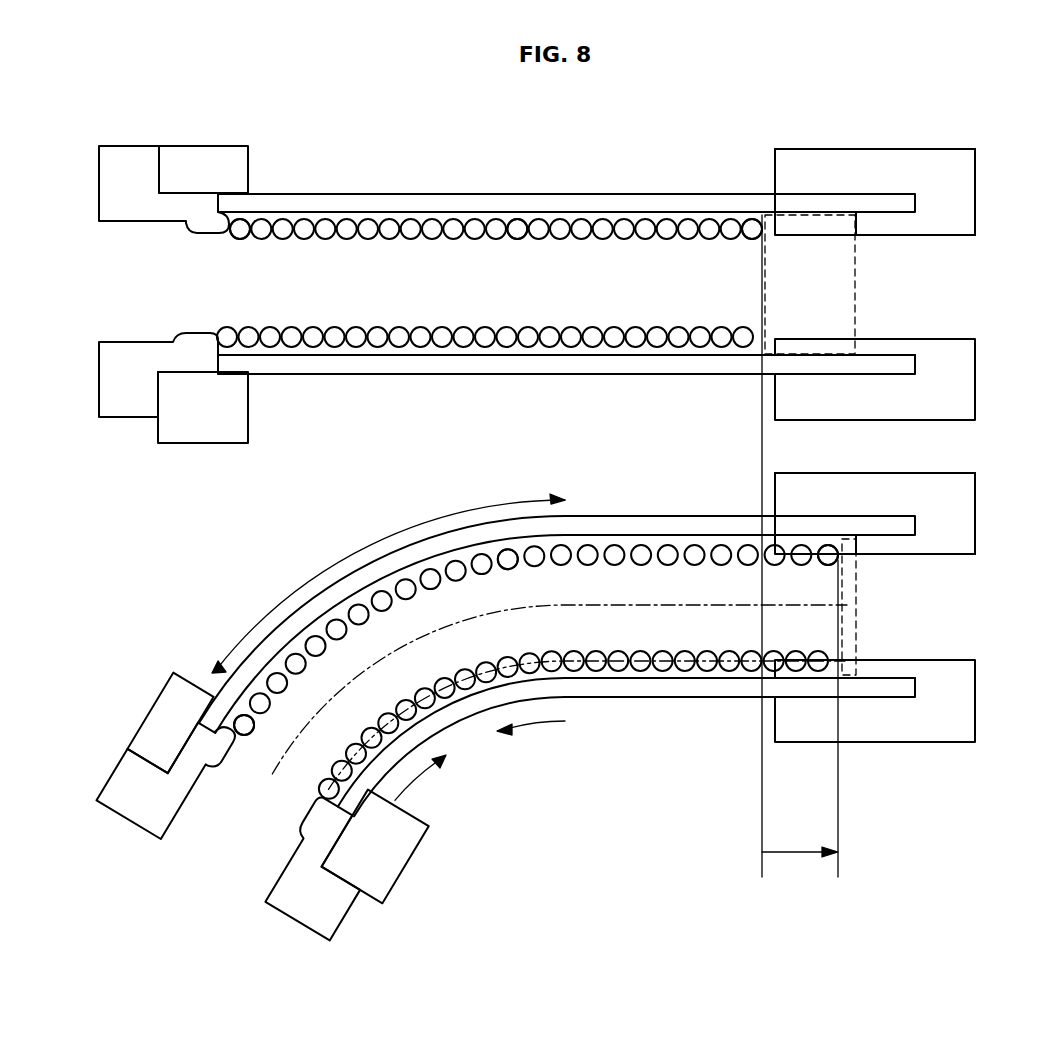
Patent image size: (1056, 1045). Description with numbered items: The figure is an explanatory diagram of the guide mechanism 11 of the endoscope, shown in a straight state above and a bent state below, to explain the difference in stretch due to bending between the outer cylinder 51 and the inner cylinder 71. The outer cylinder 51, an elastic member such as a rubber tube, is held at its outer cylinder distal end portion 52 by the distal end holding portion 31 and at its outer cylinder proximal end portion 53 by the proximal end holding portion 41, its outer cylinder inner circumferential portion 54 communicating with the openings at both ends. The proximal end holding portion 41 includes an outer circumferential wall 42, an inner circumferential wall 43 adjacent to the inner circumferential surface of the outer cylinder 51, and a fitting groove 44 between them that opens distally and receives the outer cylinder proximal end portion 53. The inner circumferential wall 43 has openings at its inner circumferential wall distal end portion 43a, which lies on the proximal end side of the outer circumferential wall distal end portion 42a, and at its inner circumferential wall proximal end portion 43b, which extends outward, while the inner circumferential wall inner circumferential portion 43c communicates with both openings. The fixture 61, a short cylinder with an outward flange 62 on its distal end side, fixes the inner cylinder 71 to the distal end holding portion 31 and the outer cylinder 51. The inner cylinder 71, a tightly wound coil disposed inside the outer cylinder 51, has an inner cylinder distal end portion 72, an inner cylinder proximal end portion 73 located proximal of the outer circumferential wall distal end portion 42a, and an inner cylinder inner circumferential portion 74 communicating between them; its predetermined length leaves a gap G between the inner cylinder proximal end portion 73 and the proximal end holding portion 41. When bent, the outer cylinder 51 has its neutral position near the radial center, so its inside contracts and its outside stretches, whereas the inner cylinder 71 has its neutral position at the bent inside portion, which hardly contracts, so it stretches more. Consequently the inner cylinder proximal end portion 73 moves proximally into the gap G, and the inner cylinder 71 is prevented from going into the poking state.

The guide mechanism 11 is at (697, 191).
The distal end holding portion 31 is at (192, 428).
The proximal end holding portion 41 is at (934, 208).
The outer circumferential wall 42 is at (836, 149).
The outer circumferential wall distal end portion 42a is at (776, 176).
The inner circumferential wall 43 is at (962, 237).
The inner circumferential wall distal end portion 43a is at (858, 224).
The inner circumferential wall proximal end portion 43b is at (977, 223).
The inner circumferential wall inner circumferential portion 43c is at (938, 237).
The fitting groove 44 is at (878, 376).
The outer cylinder 51 is at (437, 375).
The outer cylinder distal end portion 52 is at (222, 356).
The outer cylinder proximal end portion 53 is at (918, 360).
The outer cylinder inner circumferential portion 54 is at (540, 349).
The fixture 61 is at (99, 208).
The outward flange 62 is at (99, 177).
The inner cylinder 71 is at (396, 240).
The inner cylinder distal end portion 72 is at (244, 240).
The inner cylinder proximal end portion 73 is at (755, 241).
The inner cylinder inner circumferential portion 74 is at (520, 240).
The gap G is at (857, 303).